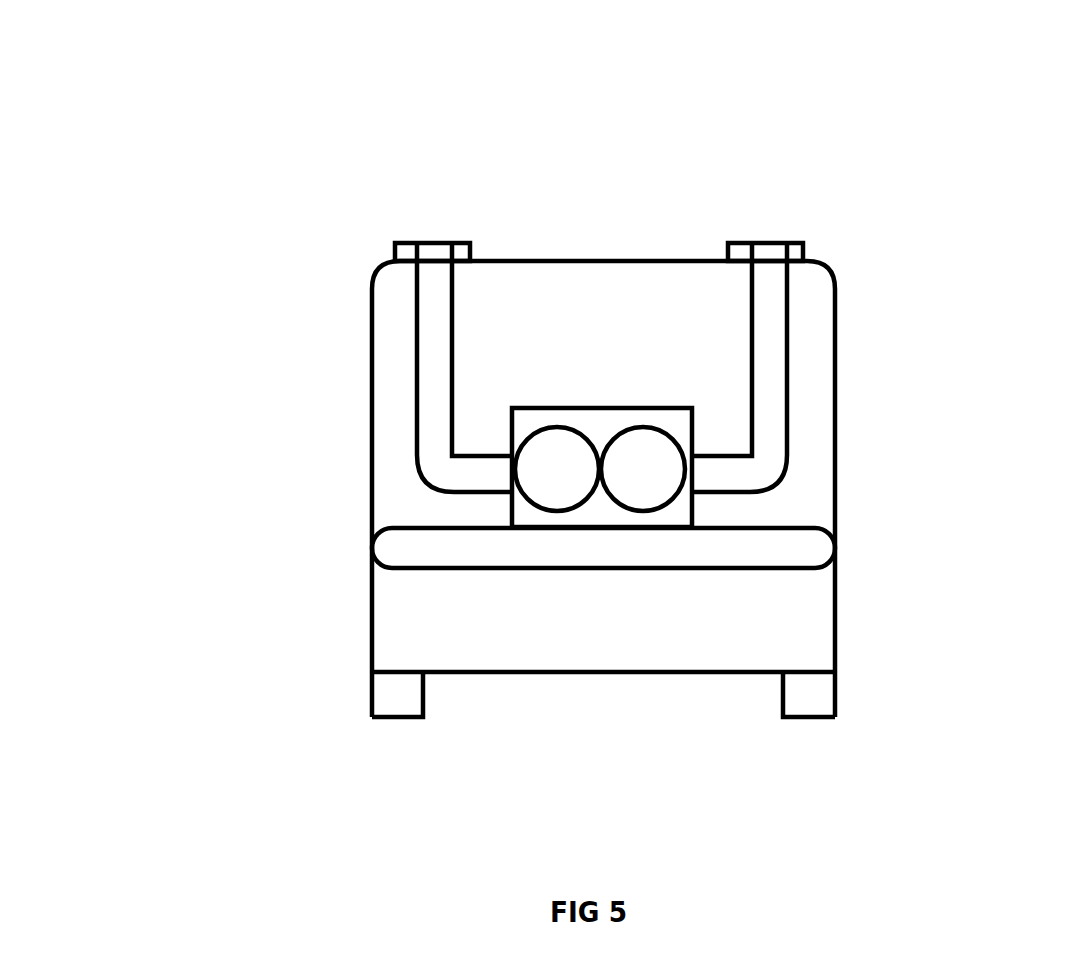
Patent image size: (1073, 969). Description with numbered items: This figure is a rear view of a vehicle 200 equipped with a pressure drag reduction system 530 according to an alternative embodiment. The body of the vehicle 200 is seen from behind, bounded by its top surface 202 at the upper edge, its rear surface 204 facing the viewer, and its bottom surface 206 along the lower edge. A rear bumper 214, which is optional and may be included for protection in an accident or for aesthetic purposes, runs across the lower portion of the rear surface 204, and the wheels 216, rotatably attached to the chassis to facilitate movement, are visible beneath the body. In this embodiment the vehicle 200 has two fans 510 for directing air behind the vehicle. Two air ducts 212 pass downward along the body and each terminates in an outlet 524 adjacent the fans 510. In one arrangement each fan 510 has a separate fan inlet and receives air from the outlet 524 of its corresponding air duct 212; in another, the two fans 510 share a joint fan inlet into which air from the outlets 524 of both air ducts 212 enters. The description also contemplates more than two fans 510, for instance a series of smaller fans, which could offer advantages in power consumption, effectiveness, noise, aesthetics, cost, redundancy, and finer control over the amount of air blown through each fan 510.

The vehicle 200 is at (865, 393).
The top surface 202 is at (658, 232).
The rear surface 204 is at (395, 395).
The bottom surface 206 is at (553, 680).
The air duct 212 is at (753, 238).
The rear bumper 214 is at (397, 543).
The wheels 216 is at (807, 690).
The fan 510 is at (642, 468).
The outlet 524 is at (710, 465).
The pressure drag reduction system 530 is at (823, 253).